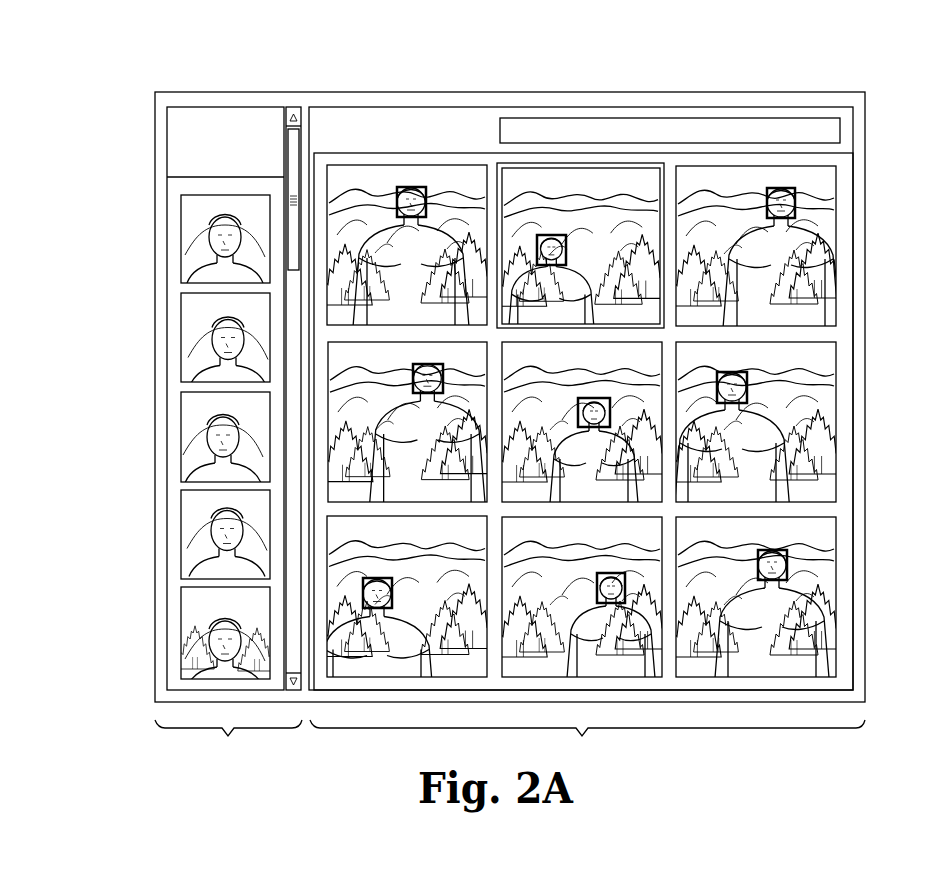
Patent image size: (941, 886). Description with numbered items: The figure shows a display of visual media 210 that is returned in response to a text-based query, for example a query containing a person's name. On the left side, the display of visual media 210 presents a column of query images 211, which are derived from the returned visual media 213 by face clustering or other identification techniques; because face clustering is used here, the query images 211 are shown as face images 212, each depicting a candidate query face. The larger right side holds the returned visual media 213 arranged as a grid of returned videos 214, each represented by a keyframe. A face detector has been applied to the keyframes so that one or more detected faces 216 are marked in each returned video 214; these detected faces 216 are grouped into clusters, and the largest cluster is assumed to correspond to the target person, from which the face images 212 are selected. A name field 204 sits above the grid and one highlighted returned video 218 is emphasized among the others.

The display of visual media 210 is at (86, 78).
The query images 211 is at (228, 435).
The face images 212 is at (181, 441).
The returned visual media 213 is at (587, 435).
The name field 204 is at (535, 118).
The returned videos 214 is at (708, 446).
The detected faces 216 is at (620, 283).
The selected image 218 is at (582, 196).